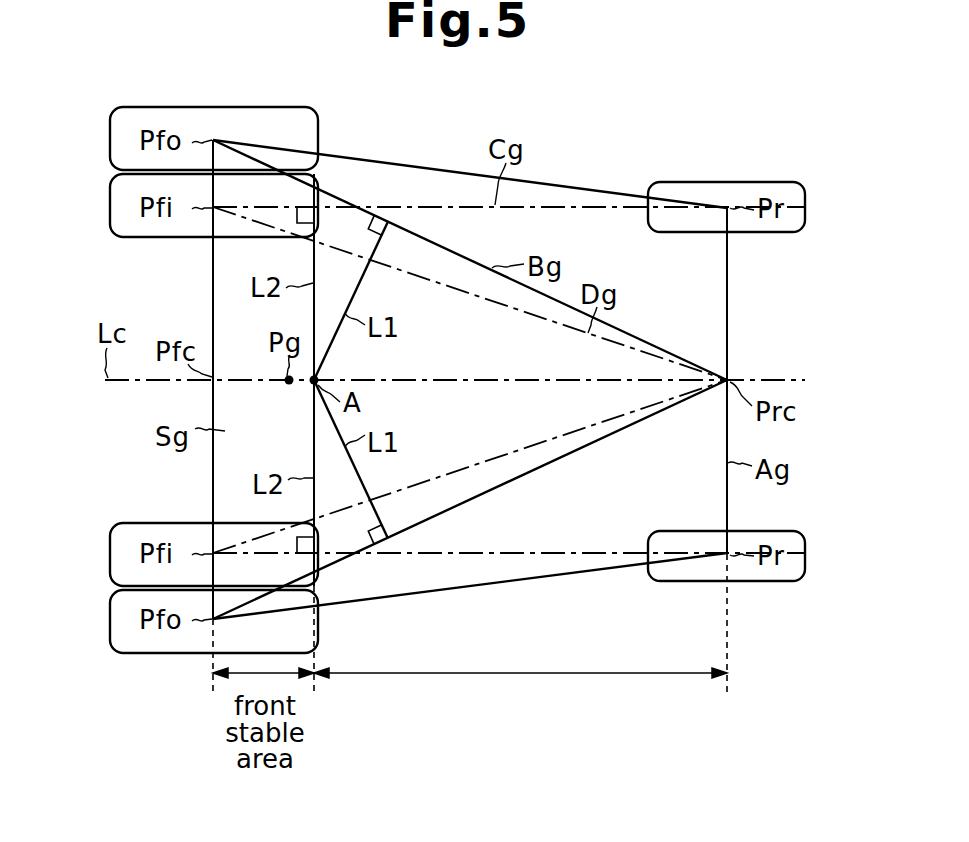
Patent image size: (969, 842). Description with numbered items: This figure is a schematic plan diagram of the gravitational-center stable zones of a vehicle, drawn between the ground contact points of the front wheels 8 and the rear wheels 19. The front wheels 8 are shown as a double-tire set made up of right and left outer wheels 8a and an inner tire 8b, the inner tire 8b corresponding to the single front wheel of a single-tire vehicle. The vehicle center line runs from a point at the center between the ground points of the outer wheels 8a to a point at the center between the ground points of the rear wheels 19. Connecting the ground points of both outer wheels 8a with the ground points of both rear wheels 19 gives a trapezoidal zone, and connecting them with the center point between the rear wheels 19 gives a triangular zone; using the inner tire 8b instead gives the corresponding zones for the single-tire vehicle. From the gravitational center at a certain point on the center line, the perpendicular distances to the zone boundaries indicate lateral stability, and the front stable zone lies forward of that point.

The front wheels 8 is at (58, 120).
The outer wheels 8a is at (111, 140).
The inner tire 8b is at (111, 209).
The rear wheels 19 is at (805, 205).